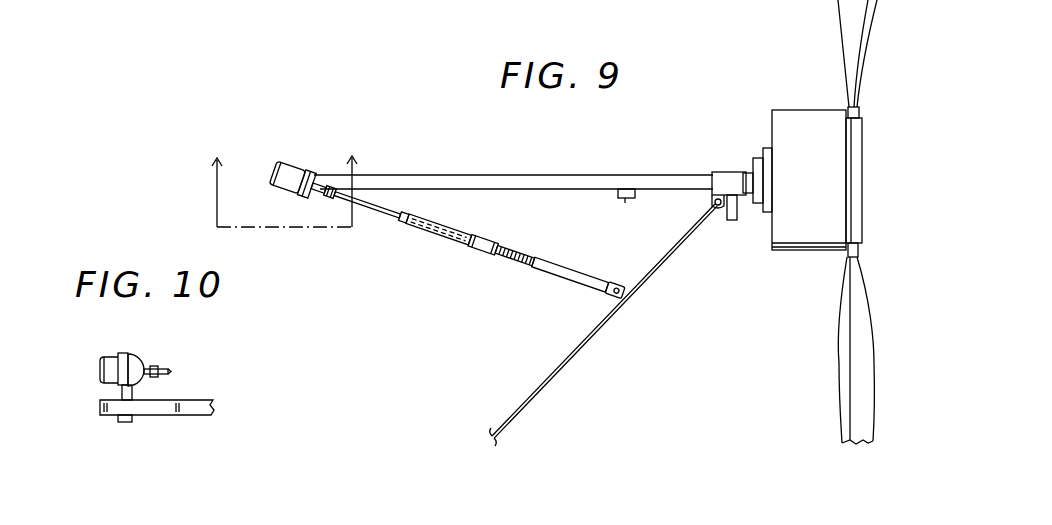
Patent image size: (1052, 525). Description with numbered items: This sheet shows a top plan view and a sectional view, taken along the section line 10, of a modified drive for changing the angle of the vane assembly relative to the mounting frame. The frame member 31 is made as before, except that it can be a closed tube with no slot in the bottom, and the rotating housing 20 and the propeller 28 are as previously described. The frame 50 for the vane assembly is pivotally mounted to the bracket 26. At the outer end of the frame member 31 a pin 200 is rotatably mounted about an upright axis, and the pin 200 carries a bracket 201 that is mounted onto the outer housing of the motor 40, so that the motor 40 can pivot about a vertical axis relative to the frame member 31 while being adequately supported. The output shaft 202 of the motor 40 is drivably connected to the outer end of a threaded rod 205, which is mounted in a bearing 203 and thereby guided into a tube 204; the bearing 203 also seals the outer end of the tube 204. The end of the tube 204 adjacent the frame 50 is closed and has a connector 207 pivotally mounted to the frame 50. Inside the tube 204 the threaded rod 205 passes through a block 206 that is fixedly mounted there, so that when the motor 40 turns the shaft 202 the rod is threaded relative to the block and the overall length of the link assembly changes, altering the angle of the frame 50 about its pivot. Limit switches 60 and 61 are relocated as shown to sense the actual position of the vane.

In FIG. 9, the section line 10- 10 is at (285, 180).
In FIG. 9, the rotating housing 20 is at (788, 110).
In FIG. 9, the bracket 26 is at (718, 173).
In FIG. 9, the propeller 28 is at (853, 370).
In FIG. 9, the frame member 31 is at (538, 176).
In FIG. 10, the frame member 31 is at (192, 417).
In FIG. 9, the motor 40 is at (284, 182).
In FIG. 9, the frame 50 is at (657, 264).
In FIG. 9, the limit switch 60 is at (729, 220).
In FIG. 9, the limit switch 61 is at (634, 198).
In FIG. 10, the pin 200 is at (120, 385).
In FIG. 9, the bracket 201 is at (303, 172).
In FIG. 10, the bracket 201 is at (120, 356).
In FIG. 10, the output shaft 202 is at (146, 362).
In FIG. 9, the bearing 203 is at (405, 215).
In FIG. 9, the tube 204 is at (543, 277).
In FIG. 9, the threaded rod 205 is at (380, 213).
In FIG. 9, the block 206 is at (493, 247).
In FIG. 9, the connector 207 is at (606, 292).